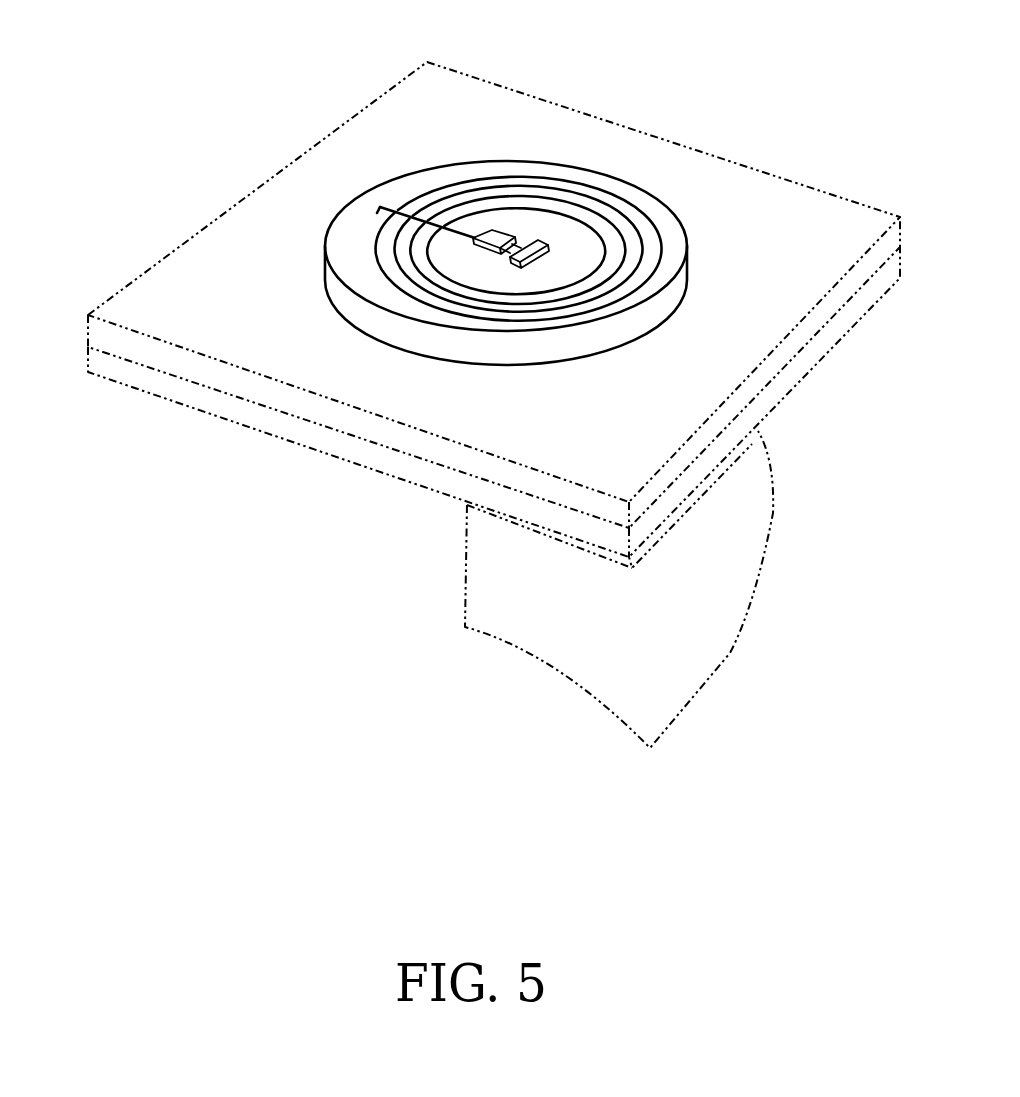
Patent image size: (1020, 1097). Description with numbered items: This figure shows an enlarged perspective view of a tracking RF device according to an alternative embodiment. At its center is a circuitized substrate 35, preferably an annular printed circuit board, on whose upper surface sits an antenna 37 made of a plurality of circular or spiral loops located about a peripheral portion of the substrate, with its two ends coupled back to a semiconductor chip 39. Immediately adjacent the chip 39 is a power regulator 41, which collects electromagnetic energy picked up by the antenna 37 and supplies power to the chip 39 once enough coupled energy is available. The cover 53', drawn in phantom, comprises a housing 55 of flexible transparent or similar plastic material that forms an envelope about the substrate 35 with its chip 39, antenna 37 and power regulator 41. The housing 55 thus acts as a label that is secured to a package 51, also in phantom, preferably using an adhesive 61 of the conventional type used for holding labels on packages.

The circuitized substrate 35 is at (662, 220).
The antenna 37 is at (567, 183).
The semiconductor chip 39 is at (493, 231).
The power regulator 41 is at (548, 248).
The package 51 is at (687, 710).
The cover 53' is at (475, 282).
The housing 55 is at (225, 258).
The adhesive 61 is at (673, 523).